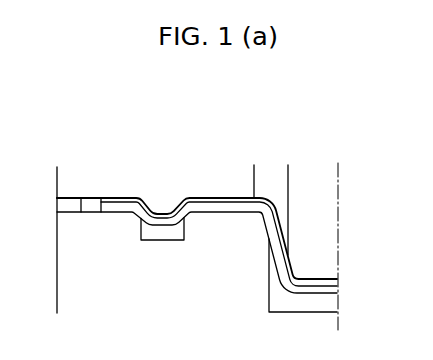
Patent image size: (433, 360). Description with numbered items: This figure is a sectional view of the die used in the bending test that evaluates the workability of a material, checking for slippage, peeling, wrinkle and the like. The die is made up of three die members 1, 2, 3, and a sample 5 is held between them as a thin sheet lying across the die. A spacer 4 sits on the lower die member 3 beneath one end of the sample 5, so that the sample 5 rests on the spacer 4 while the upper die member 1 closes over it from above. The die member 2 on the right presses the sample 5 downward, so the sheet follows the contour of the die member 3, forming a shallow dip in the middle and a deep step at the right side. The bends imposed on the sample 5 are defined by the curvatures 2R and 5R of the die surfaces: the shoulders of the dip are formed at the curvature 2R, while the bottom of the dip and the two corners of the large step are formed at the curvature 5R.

The die member 1 is at (75, 176).
The die member 2 is at (305, 176).
The die member 3 is at (65, 253).
The spacer 4 is at (72, 214).
The sample 5 is at (117, 197).
The curvature 2R is at (138, 218).
The curvature 5R is at (163, 212).